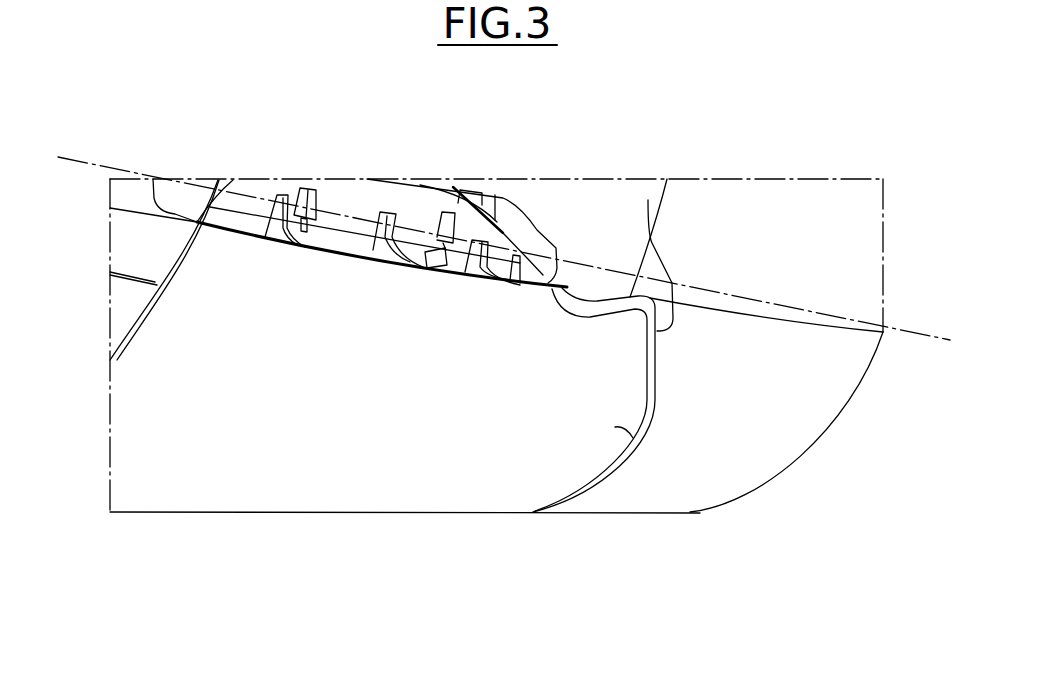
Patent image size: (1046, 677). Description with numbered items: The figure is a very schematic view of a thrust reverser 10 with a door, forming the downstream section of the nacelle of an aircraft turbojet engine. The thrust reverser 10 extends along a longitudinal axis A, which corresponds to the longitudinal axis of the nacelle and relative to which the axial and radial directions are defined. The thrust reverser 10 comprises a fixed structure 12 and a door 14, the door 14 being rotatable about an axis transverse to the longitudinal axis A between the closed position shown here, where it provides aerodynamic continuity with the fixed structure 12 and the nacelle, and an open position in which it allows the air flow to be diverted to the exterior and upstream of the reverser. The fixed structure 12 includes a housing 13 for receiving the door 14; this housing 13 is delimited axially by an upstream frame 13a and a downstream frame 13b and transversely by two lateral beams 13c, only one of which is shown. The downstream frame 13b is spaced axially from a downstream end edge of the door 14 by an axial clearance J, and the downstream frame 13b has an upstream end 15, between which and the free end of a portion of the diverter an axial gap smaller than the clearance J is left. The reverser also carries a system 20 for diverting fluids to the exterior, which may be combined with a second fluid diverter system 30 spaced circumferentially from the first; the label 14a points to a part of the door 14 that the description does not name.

The thrust reverser 10 is at (504, 298).
The fixed structure 12 is at (748, 498).
The housing 13 is at (863, 372).
The upstream frame 13a is at (110, 314).
The downstream frame 13b is at (783, 422).
The lateral beam 13c is at (538, 260).
The door 14 is at (549, 430).
The hook portion of bracket 14a is at (648, 200).
The upstream end 15 is at (615, 427).
The fluid diverter system 20 is at (525, 430).
The second fluid diverter system 30 is at (638, 353).
The longitudinal axis A is at (85, 163).
The axial clearance J is at (630, 380).